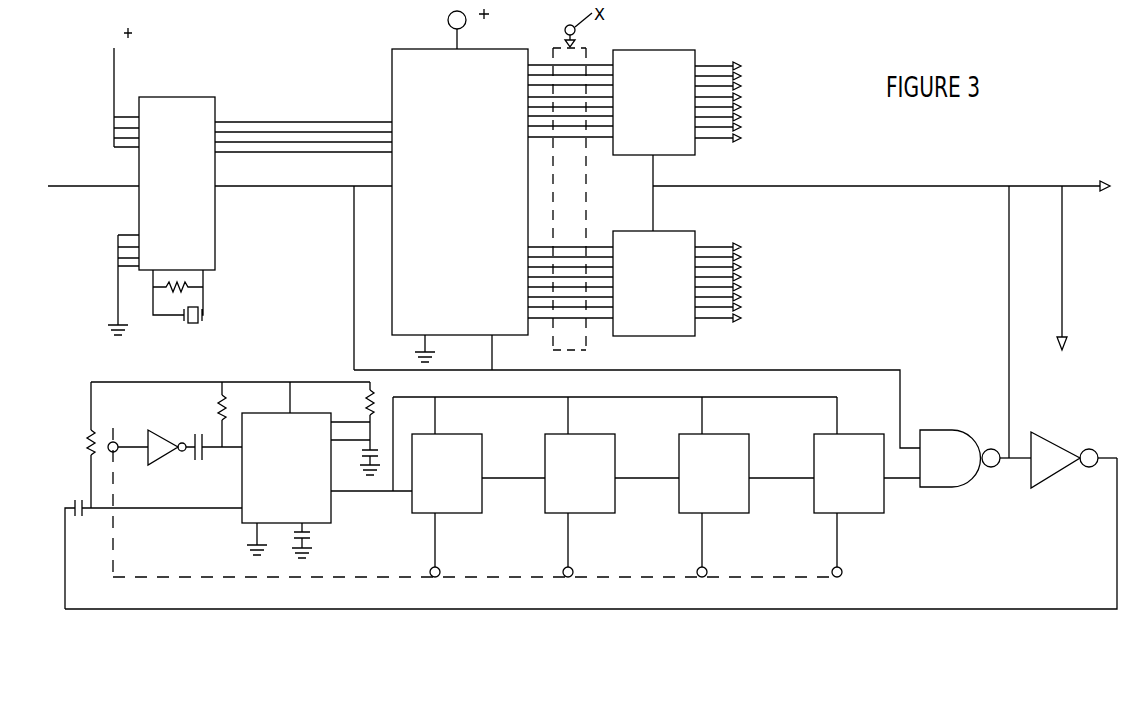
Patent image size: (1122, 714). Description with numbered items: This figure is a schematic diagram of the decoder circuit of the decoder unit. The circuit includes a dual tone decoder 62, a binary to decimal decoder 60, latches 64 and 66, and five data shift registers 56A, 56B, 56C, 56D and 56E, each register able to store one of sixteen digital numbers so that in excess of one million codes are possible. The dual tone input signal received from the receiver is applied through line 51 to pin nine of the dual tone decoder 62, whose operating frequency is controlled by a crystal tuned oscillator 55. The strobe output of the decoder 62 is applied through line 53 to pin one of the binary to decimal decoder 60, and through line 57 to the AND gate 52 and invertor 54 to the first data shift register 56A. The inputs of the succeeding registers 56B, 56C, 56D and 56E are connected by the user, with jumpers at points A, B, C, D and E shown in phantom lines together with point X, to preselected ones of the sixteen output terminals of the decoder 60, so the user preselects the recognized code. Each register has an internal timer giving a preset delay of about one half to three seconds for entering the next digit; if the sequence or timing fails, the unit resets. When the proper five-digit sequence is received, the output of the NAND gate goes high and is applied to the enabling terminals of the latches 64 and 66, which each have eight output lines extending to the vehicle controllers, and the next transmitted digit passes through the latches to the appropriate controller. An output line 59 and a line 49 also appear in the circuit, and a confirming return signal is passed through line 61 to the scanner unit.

The clear bus line 49 is at (675, 370).
The line 51 is at (102, 185).
The AND gate 52 is at (938, 447).
The line 53 is at (255, 186).
The invertor 54 is at (1052, 456).
The crystal tuned oscillator 55 is at (190, 300).
The first data shift register 56A is at (268, 472).
The data shift register 56B is at (468, 453).
The data shift register 56C is at (602, 453).
The data shift register 56D is at (736, 453).
The data shift register 56E is at (865, 505).
The line 57 is at (155, 445).
The output line to pager/vox 59 is at (833, 187).
The binary to decimal decoder 60 is at (410, 87).
The line 61 is at (1032, 190).
The dual tone decoder 62 is at (205, 107).
The latch 64 is at (663, 56).
The latch 66 is at (665, 240).